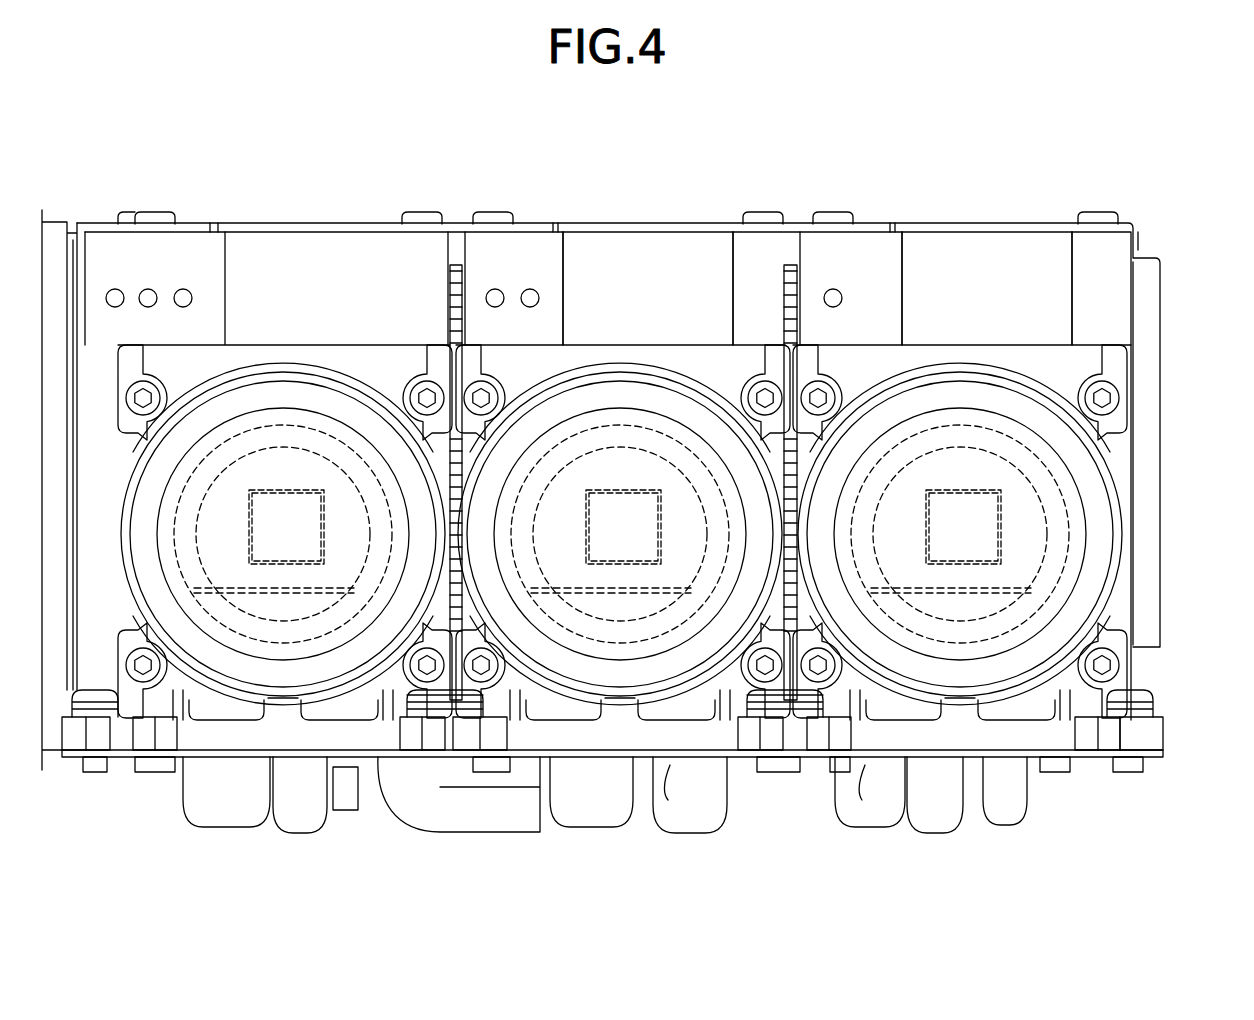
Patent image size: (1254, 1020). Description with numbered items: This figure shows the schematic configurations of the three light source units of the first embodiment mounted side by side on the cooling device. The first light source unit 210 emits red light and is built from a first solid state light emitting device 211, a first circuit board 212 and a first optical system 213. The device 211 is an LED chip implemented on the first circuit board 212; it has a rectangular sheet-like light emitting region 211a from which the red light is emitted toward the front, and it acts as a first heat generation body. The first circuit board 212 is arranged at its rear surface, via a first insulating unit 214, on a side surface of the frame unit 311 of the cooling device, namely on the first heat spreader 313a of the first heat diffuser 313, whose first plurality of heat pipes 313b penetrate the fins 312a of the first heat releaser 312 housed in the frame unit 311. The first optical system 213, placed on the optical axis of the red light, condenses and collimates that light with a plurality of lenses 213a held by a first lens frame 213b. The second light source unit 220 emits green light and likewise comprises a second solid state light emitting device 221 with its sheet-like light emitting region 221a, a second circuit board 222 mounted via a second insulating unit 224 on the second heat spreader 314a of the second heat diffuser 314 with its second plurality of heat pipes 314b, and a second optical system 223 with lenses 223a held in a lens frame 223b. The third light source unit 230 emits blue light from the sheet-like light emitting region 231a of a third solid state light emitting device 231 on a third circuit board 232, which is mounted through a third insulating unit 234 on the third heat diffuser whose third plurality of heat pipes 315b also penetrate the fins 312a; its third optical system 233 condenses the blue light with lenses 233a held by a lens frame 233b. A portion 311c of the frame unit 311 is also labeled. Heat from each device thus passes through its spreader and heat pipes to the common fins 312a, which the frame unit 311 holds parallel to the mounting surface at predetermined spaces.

The first light source unit 210 is at (1110, 340).
The first solid state light emitting device 211 is at (960, 642).
The sheet-like light emitting region 211a is at (981, 706).
The first circuit board 212 is at (960, 660).
The first optical system 213 is at (795, 899).
The lenses 213a is at (828, 788).
The first lens frame 213b is at (943, 727).
The first insulating unit 214 is at (880, 761).
The second light source unit 220 is at (760, 338).
The second solid state light emitting device 221 is at (620, 642).
The sheet-like light emitting region 221a is at (643, 706).
The second circuit board 222 is at (620, 660).
The second optical system 223 is at (598, 819).
The second connector cap 223a is at (491, 788).
The second connector cap 223b is at (609, 727).
The second insulating unit 224 is at (575, 761).
The third light source unit 230 is at (426, 338).
The third solid state light emitting device 231 is at (283, 642).
The sheet-like light emitting region 231a is at (305, 706).
The third circuit board 232 is at (283, 660).
The third optical system 233 is at (251, 819).
The third connector cap 233a is at (127, 783).
The third connector cap 233b is at (270, 727).
The third insulating unit 234 is at (269, 761).
The frame unit 311 is at (1148, 290).
The frame side wall 311c is at (107, 223).
The first heat releaser 312 is at (456, 275).
The fins 312a is at (792, 283).
The first heat diffuser 313 is at (938, 227).
The first heat spreader 313a is at (866, 247).
The first plurality of heat pipes 313b is at (1098, 213).
The second heat diffuser 314 is at (599, 227).
The second heat spreader 314a is at (532, 247).
The second plurality of heat pipes 314b is at (383, 793).
The third plurality of heat pipes 315b is at (170, 213).